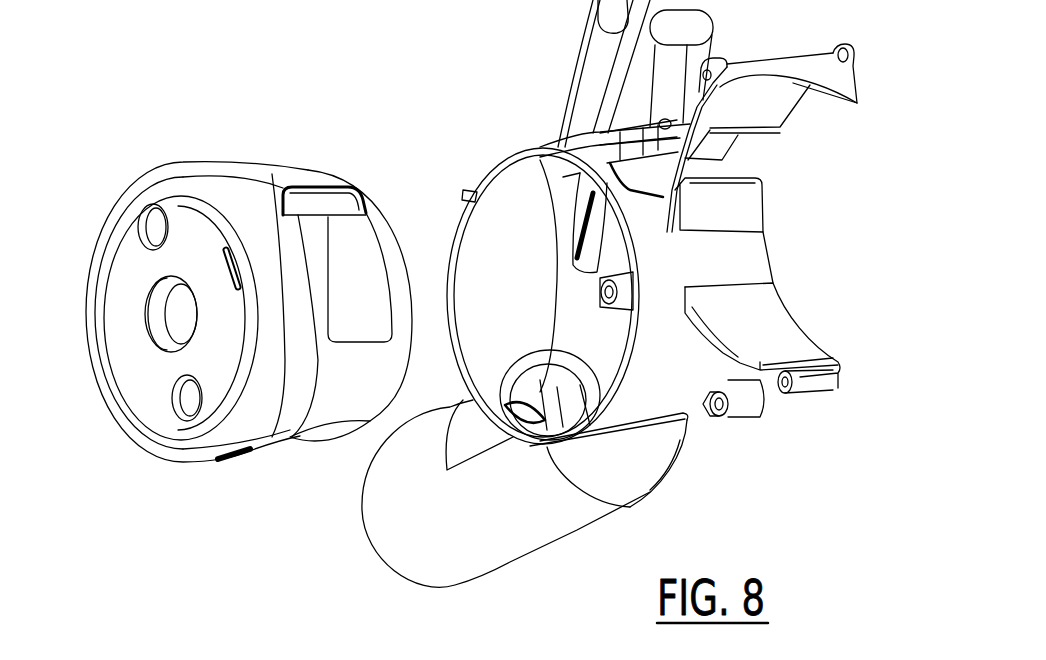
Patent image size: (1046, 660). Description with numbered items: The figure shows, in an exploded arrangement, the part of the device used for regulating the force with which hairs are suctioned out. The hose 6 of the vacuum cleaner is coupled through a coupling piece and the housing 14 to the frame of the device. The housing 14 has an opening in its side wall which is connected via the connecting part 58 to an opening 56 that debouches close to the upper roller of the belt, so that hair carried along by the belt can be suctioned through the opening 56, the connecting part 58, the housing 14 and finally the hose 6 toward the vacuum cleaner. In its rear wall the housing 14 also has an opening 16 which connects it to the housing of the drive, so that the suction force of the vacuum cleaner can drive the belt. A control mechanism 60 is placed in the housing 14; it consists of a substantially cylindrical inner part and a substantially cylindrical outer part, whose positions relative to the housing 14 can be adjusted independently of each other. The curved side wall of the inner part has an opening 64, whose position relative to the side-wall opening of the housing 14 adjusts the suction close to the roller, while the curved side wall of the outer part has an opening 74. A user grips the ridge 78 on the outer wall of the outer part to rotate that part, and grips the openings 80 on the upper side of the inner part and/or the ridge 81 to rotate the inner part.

The hose 6 is at (508, 527).
The housing 14 is at (677, 385).
The opening 16 is at (603, 239).
The opening 56 is at (790, 159).
The connecting part 58 is at (645, 188).
The control mechanism 60 is at (126, 110).
The opening 64 is at (322, 200).
The opening 74 is at (383, 240).
The ridge 78 is at (242, 502).
The openings 80 is at (150, 230).
The ridge 81 is at (243, 257).